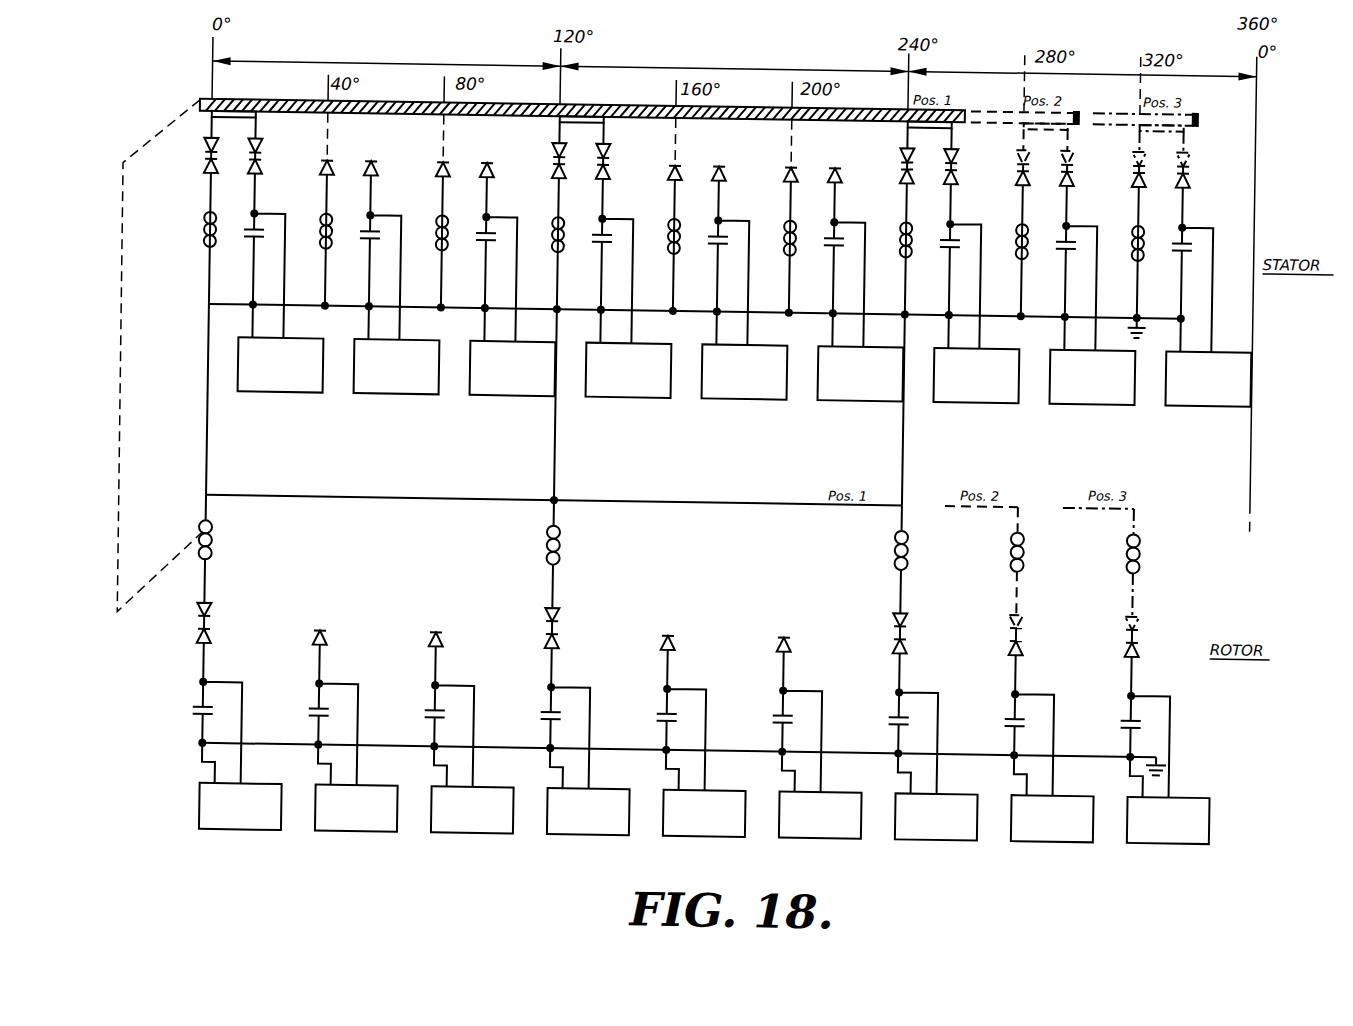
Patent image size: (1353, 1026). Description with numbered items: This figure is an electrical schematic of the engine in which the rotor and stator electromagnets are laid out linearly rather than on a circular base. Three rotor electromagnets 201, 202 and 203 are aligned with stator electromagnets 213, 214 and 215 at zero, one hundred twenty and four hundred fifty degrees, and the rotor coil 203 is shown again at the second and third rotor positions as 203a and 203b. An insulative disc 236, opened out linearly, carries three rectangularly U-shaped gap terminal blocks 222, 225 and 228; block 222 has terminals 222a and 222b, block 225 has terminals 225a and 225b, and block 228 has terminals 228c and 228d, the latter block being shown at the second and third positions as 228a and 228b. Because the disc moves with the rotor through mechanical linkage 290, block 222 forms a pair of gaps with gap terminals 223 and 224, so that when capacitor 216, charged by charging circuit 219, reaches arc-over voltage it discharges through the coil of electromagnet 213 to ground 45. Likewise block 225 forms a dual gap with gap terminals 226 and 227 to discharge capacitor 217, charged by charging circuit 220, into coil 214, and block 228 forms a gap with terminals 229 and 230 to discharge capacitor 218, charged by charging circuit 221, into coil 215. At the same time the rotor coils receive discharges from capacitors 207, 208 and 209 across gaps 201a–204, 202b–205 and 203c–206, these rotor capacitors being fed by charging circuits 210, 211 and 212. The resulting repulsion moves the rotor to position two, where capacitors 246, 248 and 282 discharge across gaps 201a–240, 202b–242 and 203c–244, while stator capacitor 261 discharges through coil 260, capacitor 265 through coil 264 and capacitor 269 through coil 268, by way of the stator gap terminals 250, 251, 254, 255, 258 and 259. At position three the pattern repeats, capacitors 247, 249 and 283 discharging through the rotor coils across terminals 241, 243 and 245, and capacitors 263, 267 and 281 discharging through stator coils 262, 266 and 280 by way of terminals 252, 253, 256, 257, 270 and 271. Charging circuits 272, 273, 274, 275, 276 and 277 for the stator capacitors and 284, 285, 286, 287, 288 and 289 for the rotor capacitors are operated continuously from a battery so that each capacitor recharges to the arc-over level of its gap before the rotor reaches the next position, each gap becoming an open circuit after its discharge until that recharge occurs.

The ground 45 is at (1140, 325).
The rotor electromagnet coil 201 is at (214, 550).
The gap terminal 201a is at (214, 618).
The rotor electromagnet coil 202 is at (562, 549).
The gap terminal 202b is at (562, 622).
The rotor electromagnet coil 203 is at (910, 552).
The rotor pickup coil 203a is at (1026, 551).
The rotor pickup coil 203b is at (1142, 550).
The gap terminal 203c is at (910, 622).
The gap terminal 204 is at (214, 644).
The gap terminal 205 is at (562, 644).
The gap terminal 206 is at (910, 644).
The capacitor 207 is at (196, 723).
The capacitor 208 is at (544, 718).
The capacitor 209 is at (892, 722).
The charging circuit 210 is at (238, 837).
The charging circuit 211 is at (578, 837).
The charging circuit 212 is at (938, 837).
The stator electromagnet coil 213 is at (202, 256).
The stator electromagnet coil 214 is at (552, 254).
The stator electromagnet coil 215 is at (900, 254).
The capacitor 216 is at (248, 251).
The capacitor 217 is at (596, 251).
The capacitor 218 is at (946, 251).
The charging circuit 219 is at (272, 399).
The charging circuit 220 is at (620, 399).
The charging circuit 221 is at (975, 399).
The gap terminal block 222 is at (233, 125).
The terminal 222a is at (203, 157).
The terminal 222b is at (256, 150).
The gap terminal 223 is at (200, 181).
The gap terminal 224 is at (257, 173).
The gap terminal block 225 is at (581, 130).
The terminal 225a is at (551, 152).
The terminal 225b is at (603, 152).
The gap terminal 226 is at (550, 176).
The gap terminal 227 is at (605, 172).
The gap terminal block 228 is at (929, 137).
The stator segment position 2 228a is at (1048, 140).
The stator segment position 3 228b is at (1164, 141).
The terminal 228c is at (900, 156).
The terminal 228d is at (949, 153).
The gap terminal 229 is at (898, 179).
The gap terminal 230 is at (952, 176).
The insulative disc 236 is at (194, 107).
The gap terminal 240 is at (327, 640).
The diode 241 is at (446, 644).
The gap terminal 242 is at (675, 640).
The diode 243 is at (794, 644).
The gap terminal 244 is at (1026, 644).
The diode 245 is at (1142, 646).
The capacitor 246 is at (312, 718).
The capacitor 247 is at (428, 718).
The capacitor 248 is at (660, 718).
The capacitor 249 is at (776, 718).
The diode 250 is at (324, 165).
The diode 251 is at (370, 168).
The diode 252 is at (434, 173).
The diode 253 is at (478, 170).
The diode 254 is at (672, 165).
The diode 255 is at (718, 168).
The diode 256 is at (788, 165).
The diode 257 is at (832, 168).
The diode 258 is at (1022, 182).
The diode 259 is at (1066, 178).
The stator electromagnet coil 260 is at (320, 221).
The capacitor 261 is at (364, 251).
The stator electromagnet coil 262 is at (434, 254).
The capacitor 263 is at (484, 251).
The stator electromagnet coil 264 is at (668, 254).
The capacitor 265 is at (716, 251).
The stator electromagnet coil 266 is at (784, 254).
The capacitor 267 is at (830, 251).
The stator electromagnet coil 268 is at (1016, 254).
The capacitor 269 is at (1062, 251).
The diode 270 is at (1138, 179).
The diode 271 is at (1184, 174).
The charging circuit 272 is at (380, 399).
The charging circuit 273 is at (490, 399).
The charging circuit 274 is at (728, 399).
The charging circuit 275 is at (835, 399).
The charging circuit 276 is at (1082, 399).
The charging circuit 277 is at (1194, 399).
The stator electromagnet coil 280 is at (1132, 254).
The capacitor 281 is at (1176, 251).
The capacitor 282 is at (1008, 718).
The capacitor 283 is at (1124, 718).
The charging circuit 284 is at (345, 837).
The charging circuit 285 is at (462, 837).
The charging circuit 286 is at (690, 837).
The charging circuit 287 is at (812, 837).
The charging circuit 288 is at (1048, 837).
The charging circuit 289 is at (1163, 837).
The mechanical linkage 290 is at (121, 405).